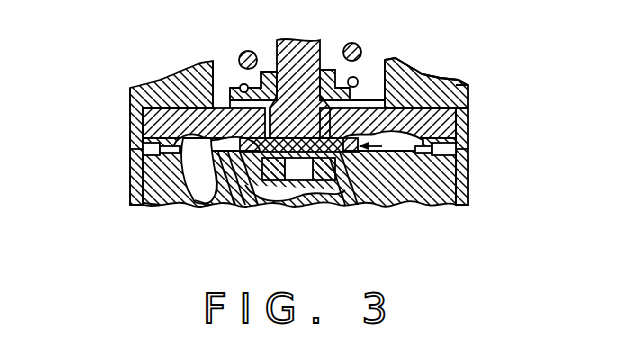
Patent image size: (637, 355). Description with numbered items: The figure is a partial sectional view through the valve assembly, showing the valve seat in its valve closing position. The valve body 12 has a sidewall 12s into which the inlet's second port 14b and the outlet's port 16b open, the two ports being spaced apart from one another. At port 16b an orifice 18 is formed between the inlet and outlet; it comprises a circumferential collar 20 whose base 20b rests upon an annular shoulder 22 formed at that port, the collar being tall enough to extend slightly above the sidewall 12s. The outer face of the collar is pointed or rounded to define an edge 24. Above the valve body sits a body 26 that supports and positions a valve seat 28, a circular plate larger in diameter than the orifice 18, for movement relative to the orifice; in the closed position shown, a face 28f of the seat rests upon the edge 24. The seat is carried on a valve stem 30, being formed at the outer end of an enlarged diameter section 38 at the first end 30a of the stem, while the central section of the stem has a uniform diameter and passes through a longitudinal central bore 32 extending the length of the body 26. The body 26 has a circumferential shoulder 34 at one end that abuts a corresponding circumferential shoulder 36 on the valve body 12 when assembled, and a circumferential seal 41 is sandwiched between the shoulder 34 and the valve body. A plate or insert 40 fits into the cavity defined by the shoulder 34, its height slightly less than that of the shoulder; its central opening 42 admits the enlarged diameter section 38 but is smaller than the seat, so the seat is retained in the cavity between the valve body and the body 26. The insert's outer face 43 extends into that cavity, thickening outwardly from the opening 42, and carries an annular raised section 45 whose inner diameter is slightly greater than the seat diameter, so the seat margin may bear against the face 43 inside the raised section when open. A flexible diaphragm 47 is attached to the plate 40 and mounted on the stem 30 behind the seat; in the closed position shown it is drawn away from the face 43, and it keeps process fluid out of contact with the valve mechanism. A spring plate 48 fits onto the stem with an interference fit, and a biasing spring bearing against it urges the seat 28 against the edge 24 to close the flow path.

The valve body 12 is at (470, 170).
The sidewall 12s is at (183, 150).
The second port 14b is at (150, 205).
The port 16b is at (323, 205).
The orifice 18 is at (282, 194).
The circumferential collar 20 is at (248, 205).
The base 20b is at (300, 200).
The annular shoulder 22 is at (348, 208).
The edge 24 is at (277, 104).
The body 26 is at (426, 66).
The valve seat 28 is at (412, 151).
The face 28f is at (356, 152).
The valve stem 30 is at (291, 36).
The first end 30a is at (231, 104).
The central bore 32 is at (368, 58).
The circumferential shoulder 34 is at (130, 140).
The circumferential shoulder 36 is at (130, 152).
The enlarged diameter section 38 is at (357, 92).
The plate or insert 40 is at (464, 106).
The circumferential seal 41 is at (463, 152).
The central opening 42 is at (322, 100).
The outer face 43 is at (210, 205).
The annular raised section 45 is at (232, 205).
The flexible diaphragm 47 is at (245, 205).
The spring plate 48 is at (430, 80).